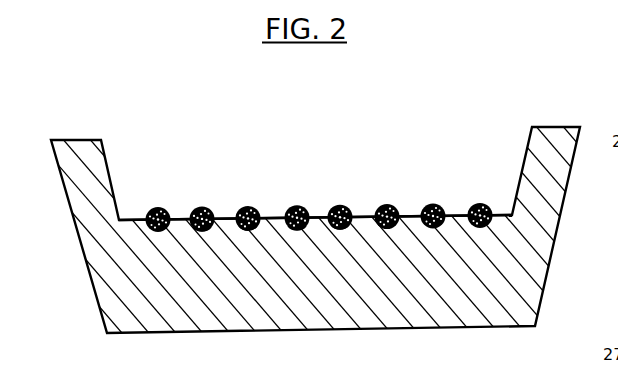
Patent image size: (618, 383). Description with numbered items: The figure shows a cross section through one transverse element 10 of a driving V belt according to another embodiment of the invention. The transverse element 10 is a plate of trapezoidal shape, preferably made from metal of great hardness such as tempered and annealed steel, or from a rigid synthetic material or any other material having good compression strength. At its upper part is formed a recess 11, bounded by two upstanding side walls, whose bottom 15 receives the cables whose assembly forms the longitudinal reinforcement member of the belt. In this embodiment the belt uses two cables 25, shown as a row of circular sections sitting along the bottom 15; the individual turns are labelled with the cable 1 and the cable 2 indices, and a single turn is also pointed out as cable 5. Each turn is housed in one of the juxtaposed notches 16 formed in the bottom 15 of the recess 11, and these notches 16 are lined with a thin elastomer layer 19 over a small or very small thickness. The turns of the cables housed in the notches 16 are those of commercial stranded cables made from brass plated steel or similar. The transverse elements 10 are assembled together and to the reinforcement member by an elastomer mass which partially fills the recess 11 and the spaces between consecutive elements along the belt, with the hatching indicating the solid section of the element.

The transverse element 10 is at (552, 142).
The recess 11 is at (300, 130).
The cable 2 is at (159, 207).
The cable 5 is at (248, 206).
The cable 1 is at (291, 206).
The cables 25 is at (348, 204).
The thin elastomer layer 19 is at (199, 231).
The notches 16 is at (292, 231).
The bottom 15 is at (372, 227).